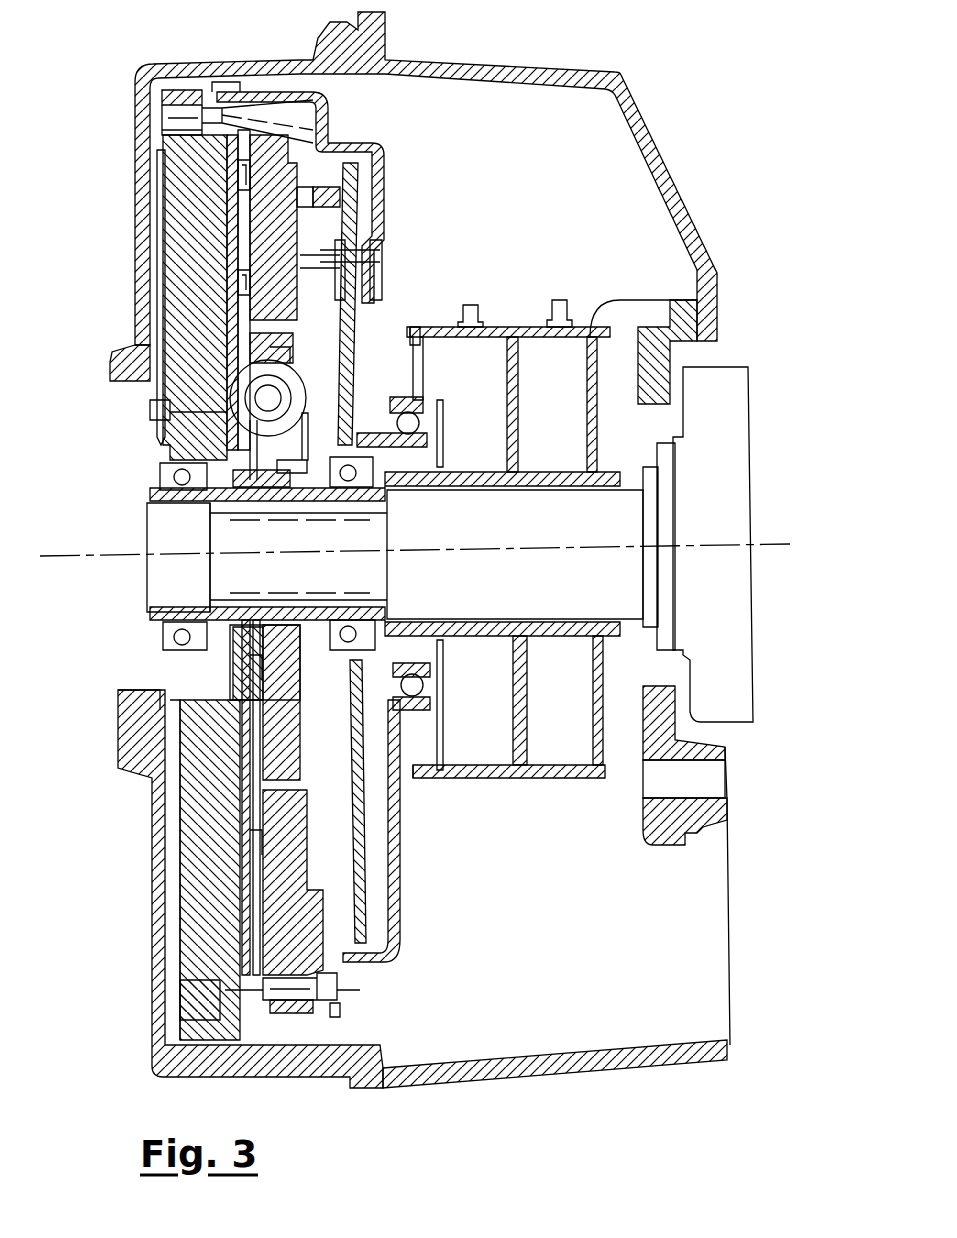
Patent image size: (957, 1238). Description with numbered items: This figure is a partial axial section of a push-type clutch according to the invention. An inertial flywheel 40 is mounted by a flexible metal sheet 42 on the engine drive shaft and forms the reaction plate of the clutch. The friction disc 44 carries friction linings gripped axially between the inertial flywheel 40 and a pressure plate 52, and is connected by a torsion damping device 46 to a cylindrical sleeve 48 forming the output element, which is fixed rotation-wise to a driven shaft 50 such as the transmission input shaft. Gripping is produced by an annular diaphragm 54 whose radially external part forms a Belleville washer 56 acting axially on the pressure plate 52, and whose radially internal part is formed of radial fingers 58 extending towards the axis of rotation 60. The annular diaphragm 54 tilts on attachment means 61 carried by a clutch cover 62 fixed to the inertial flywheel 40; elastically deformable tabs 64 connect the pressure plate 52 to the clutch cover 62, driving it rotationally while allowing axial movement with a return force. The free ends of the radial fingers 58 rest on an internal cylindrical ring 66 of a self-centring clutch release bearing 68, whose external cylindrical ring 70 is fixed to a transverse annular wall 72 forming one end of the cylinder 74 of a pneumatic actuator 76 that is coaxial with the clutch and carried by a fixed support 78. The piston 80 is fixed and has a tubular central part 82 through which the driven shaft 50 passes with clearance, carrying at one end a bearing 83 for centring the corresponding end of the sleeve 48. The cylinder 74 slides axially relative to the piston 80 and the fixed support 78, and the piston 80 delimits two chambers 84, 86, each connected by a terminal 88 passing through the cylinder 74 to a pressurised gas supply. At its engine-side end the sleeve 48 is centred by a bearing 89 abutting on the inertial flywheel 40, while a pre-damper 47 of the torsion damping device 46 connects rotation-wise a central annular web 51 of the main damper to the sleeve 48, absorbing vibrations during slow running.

The inertial flywheel 40 is at (192, 185).
The flexible metal sheet 42 is at (165, 240).
The friction disc 44 is at (250, 875).
The torsion damping device 46 is at (228, 400).
The pre-damper 47 is at (185, 703).
The cylindrical sleeve 48 is at (175, 520).
The driven shaft 50 is at (245, 575).
The central annular web 51 is at (265, 652).
The pressure plate 52 is at (378, 286).
The annular diaphragm 54 is at (405, 888).
The Belleville washer 56 is at (385, 213).
The radial fingers 58 is at (318, 698).
The axis of rotation 60 is at (78, 554).
The attachment means 61 is at (385, 250).
The clutch cover 62 is at (370, 140).
The elastically deformable tabs 64 is at (320, 1020).
The internal cylindrical ring 66 is at (376, 415).
The clutch release bearing 68 is at (388, 690).
The external cylindrical ring 70 is at (405, 380).
The transverse annular wall 72 is at (445, 458).
The cylinder 74 is at (548, 760).
The clutch-disengaging control pneumatic actuator 76 is at (520, 790).
The fixed support 78 is at (650, 173).
The piston 80 is at (530, 705).
The tubular central part 82 is at (478, 640).
The bearing 83 is at (322, 480).
The chamber 84 is at (498, 368).
The chamber 86 is at (550, 385).
The terminal 88 is at (475, 305).
The bearing 89 is at (165, 470).